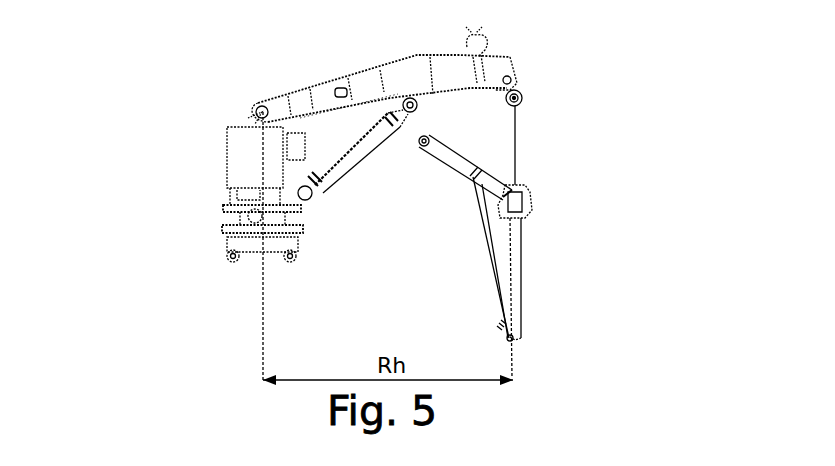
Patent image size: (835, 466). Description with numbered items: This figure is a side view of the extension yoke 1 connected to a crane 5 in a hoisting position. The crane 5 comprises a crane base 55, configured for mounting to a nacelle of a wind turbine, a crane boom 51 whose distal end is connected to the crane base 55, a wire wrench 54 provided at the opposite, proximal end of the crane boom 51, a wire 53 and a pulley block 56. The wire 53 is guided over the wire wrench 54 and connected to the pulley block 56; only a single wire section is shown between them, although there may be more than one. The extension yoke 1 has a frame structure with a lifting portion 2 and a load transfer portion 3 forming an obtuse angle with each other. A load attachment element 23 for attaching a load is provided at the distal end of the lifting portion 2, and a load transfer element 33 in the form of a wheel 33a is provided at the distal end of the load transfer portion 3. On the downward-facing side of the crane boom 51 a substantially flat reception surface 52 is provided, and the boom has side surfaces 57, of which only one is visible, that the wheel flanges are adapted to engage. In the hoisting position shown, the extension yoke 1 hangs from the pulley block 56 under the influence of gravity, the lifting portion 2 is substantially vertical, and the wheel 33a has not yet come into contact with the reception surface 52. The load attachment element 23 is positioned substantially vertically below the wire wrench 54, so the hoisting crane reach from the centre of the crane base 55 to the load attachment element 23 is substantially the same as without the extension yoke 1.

The crane 5 is at (176, 66).
The crane boom 51 is at (348, 83).
The side surfaces 57 is at (413, 87).
The wire wrench 54 is at (525, 99).
The wire 53 is at (515, 127).
The extension yoke 1 is at (604, 184).
The load transfer portion 3 is at (485, 139).
The pulley block 56 is at (530, 207).
The lifting portion 2 is at (565, 277).
The load attachment element 23 is at (550, 335).
The crane base 55 is at (247, 152).
The reception surface 52 is at (344, 105).
The load transfer element 33 is at (419, 168).
The wheel 33a is at (423, 137).